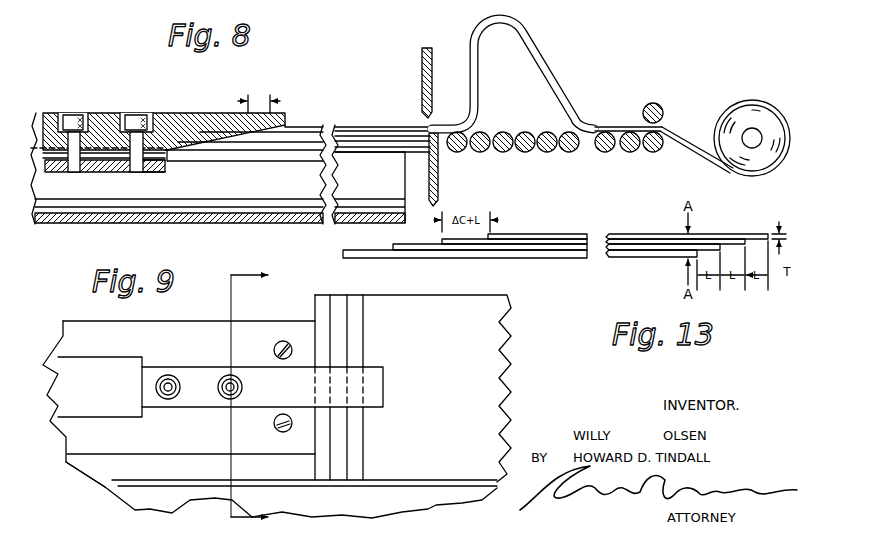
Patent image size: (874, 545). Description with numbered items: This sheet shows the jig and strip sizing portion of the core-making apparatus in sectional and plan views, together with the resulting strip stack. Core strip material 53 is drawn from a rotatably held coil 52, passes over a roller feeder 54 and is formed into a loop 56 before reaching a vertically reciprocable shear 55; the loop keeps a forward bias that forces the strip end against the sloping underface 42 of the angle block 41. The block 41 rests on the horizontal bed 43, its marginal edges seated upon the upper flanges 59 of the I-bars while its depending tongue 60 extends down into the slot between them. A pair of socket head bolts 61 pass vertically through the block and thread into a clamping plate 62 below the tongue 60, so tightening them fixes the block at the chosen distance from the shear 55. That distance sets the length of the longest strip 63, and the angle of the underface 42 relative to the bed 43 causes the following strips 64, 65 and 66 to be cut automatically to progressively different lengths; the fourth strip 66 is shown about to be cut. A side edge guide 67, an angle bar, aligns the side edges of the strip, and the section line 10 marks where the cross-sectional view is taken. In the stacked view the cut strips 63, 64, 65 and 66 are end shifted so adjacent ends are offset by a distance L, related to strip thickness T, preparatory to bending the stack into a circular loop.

In FIG. 9, the section line 10- 10 is at (249, 387).
In FIG. 8, the angle block 41 is at (190, 126).
In FIG. 9, the angle block 41 is at (192, 378).
In FIG. 8, the sloping underface 42 is at (193, 152).
In FIG. 8, the horizontal bed 43 is at (237, 145).
In FIG. 9, the horizontal bed 43 is at (92, 443).
In FIG. 8, the coil 52 is at (752, 104).
In FIG. 8, the core strip material 53 is at (615, 127).
In FIG. 8, the roller feeder 54 is at (562, 153).
In FIG. 8, the vertically reciprocable shear 55 is at (433, 82).
In FIG. 8, the loop 56 is at (500, 20).
In FIG. 8, the upper flanges 59 is at (283, 158).
In FIG. 9, the upper flanges 59 is at (61, 331).
In FIG. 8, the depending tongue 60 is at (149, 164).
In FIG. 8, the socket head bolts 61 is at (134, 113).
In FIG. 9, the socket head bolts 61 is at (173, 398).
In FIG. 8, the clamping plate 62 is at (95, 166).
In FIG. 8, the first strip 63 is at (387, 148).
In FIG. 13, the first strip 63 is at (578, 258).
In FIG. 9, the first strip 63 is at (320, 303).
In FIG. 8, the second strip 64 is at (353, 143).
In FIG. 13, the second strip 64 is at (532, 252).
In FIG. 9, the second strip 64 is at (338, 303).
In FIG. 8, the third strip 65 is at (377, 135).
In FIG. 13, the third strip 65 is at (546, 240).
In FIG. 9, the third strip 65 is at (358, 303).
In FIG. 8, the fourth strip 66 is at (352, 128).
In FIG. 13, the fourth strip 66 is at (514, 236).
In FIG. 9, the fourth strip 66 is at (400, 308).
In FIG. 9, the side edge guide 67 is at (430, 483).